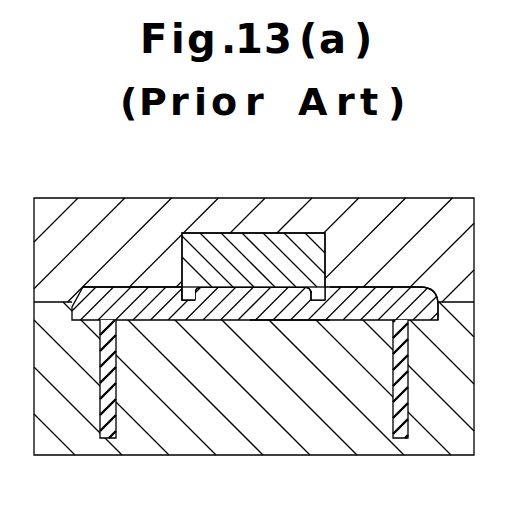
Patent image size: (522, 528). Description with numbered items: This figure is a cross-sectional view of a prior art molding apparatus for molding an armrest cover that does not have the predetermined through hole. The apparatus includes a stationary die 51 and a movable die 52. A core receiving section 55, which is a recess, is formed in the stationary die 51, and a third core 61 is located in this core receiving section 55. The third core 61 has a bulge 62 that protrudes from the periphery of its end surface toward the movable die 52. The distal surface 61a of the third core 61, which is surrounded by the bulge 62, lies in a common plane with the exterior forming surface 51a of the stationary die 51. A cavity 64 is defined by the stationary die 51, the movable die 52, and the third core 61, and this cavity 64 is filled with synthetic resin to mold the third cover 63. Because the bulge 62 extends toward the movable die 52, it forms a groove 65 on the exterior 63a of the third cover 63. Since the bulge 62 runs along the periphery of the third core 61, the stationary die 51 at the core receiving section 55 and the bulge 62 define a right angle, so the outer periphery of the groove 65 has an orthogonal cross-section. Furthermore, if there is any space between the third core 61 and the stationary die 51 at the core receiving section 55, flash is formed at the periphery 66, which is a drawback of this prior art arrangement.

The stationary die 51 is at (462, 198).
The exterior forming surface 51a is at (110, 288).
The movable die 52 is at (332, 452).
The core receiving section 55 is at (193, 228).
The third core 61 is at (307, 237).
The distal surface 61a is at (250, 305).
The bulge 62 is at (322, 294).
The third cover 63 is at (82, 298).
The exterior of the third cover 63a is at (402, 285).
The cavity 64 is at (436, 321).
The groove 65 is at (306, 322).
The periphery 66 is at (183, 292).